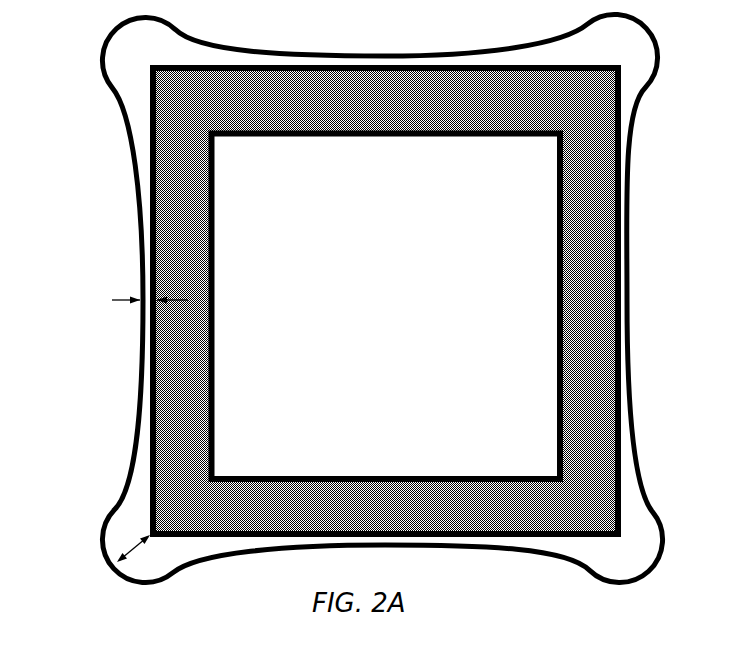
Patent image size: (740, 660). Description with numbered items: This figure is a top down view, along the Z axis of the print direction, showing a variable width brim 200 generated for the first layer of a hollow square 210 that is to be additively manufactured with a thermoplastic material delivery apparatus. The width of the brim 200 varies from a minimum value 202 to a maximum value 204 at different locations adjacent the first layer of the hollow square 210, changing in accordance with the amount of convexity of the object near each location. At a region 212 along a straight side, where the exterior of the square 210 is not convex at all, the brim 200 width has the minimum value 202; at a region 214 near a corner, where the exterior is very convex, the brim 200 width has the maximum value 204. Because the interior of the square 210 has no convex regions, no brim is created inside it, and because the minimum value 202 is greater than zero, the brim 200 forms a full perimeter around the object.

The variable width brim 200 is at (127, 77).
The hollow square 210 is at (178, 208).
The minimum value 202 is at (128, 298).
The region where the exterior of the square is not convex 212 is at (164, 287).
The region where the exterior of the square is very convex 214 is at (167, 521).
The maximum value 204 is at (118, 560).